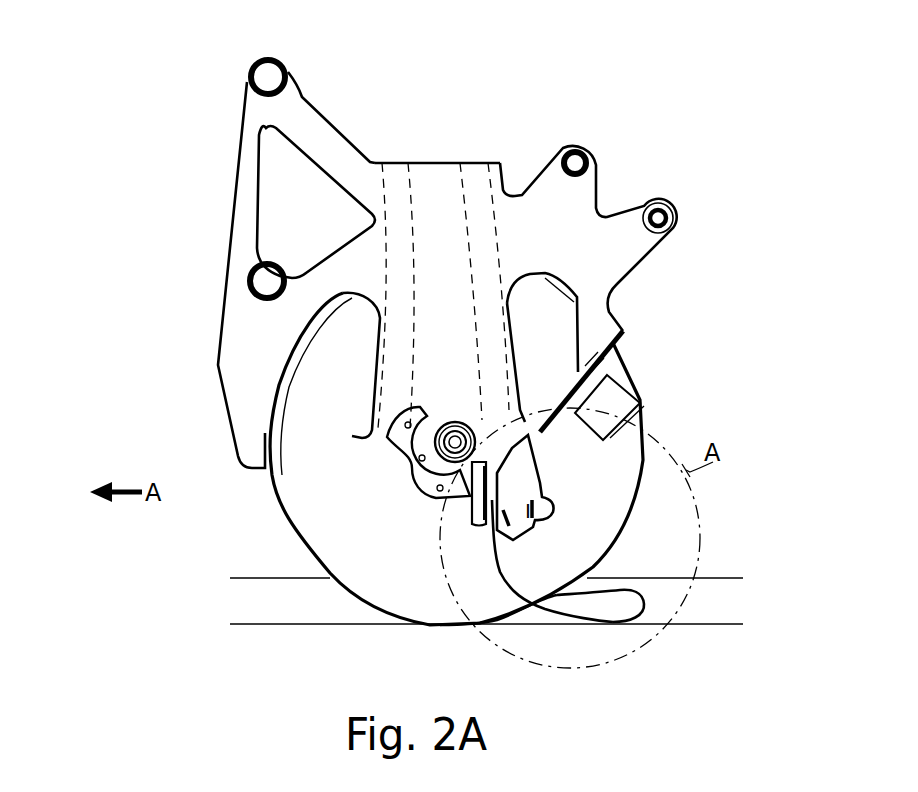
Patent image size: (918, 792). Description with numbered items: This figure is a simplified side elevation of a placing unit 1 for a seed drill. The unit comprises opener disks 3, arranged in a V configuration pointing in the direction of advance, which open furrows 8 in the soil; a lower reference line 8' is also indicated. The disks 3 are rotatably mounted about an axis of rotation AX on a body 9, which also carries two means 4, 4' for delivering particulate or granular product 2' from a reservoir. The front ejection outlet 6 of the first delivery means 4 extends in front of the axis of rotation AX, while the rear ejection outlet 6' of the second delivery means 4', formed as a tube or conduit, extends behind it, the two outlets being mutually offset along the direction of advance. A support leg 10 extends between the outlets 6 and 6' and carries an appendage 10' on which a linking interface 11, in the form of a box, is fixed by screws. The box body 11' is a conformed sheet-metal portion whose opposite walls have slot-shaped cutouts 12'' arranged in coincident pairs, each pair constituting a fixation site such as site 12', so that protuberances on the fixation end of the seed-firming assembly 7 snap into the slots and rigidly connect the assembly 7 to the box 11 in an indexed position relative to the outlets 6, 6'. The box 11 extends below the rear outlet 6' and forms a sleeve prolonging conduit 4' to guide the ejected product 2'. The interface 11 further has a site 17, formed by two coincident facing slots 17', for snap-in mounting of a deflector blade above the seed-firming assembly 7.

The placing unit 1 is at (468, 82).
The first delivery means 4 is at (437, 258).
The second delivery means 4' is at (495, 254).
The body 9 is at (234, 334).
The opener disk 3 is at (385, 594).
The support leg 10 is at (333, 369).
The axis of rotation AX is at (436, 468).
The front ejection outlet 6 is at (397, 455).
The appendage 10' is at (434, 512).
The rear ejection outlet 6' is at (552, 487).
The linking interface 11 is at (575, 387).
The body of box 11' is at (559, 290).
The fixation site 12' is at (592, 431).
The slot 12'' is at (559, 530).
The seed-firming assembly 7 is at (512, 583).
The site for fixation of deflector element 17 is at (578, 579).
The coincident facing slots 17' is at (498, 610).
The particulate or granular product 2' is at (546, 667).
The furrow 8 is at (503, 543).
The lower reference line 8' is at (489, 657).